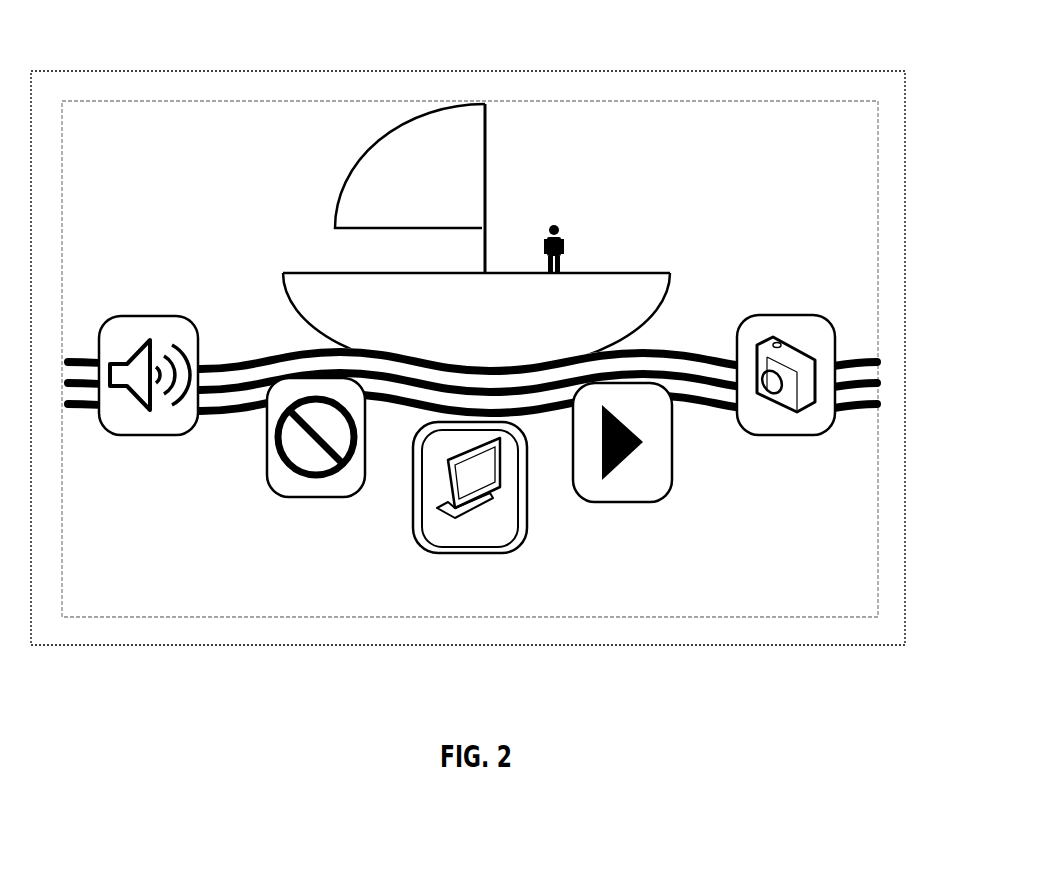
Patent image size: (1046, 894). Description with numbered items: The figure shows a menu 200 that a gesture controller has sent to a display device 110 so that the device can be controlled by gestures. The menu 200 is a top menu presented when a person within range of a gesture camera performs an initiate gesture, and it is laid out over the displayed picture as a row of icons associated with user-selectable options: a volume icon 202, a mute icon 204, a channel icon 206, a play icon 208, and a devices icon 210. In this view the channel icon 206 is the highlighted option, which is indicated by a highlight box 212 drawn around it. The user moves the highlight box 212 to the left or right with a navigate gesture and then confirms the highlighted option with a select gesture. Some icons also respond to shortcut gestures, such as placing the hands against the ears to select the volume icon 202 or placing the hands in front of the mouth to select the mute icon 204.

The display device 110 is at (667, 71).
The menu 200 is at (247, 241).
The volume icon 202 is at (177, 435).
The mute icon 204 is at (345, 497).
The channel icon 206 is at (423, 555).
The play icon 208 is at (647, 502).
The devices icon 210 is at (790, 435).
The highlight box 212 is at (500, 550).